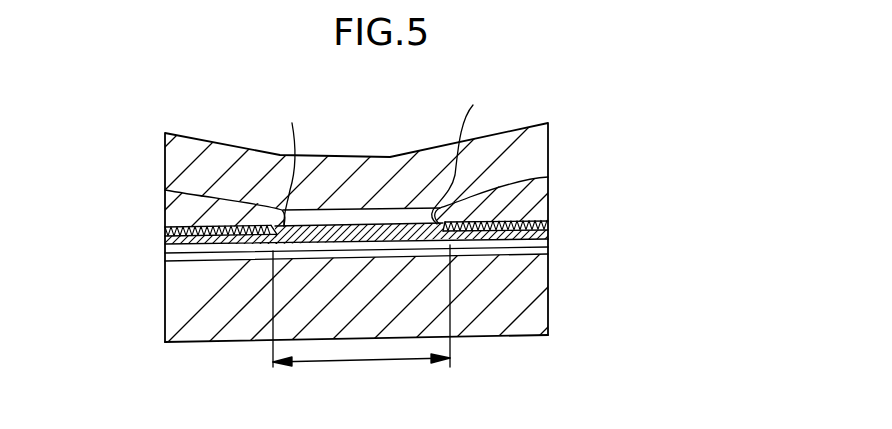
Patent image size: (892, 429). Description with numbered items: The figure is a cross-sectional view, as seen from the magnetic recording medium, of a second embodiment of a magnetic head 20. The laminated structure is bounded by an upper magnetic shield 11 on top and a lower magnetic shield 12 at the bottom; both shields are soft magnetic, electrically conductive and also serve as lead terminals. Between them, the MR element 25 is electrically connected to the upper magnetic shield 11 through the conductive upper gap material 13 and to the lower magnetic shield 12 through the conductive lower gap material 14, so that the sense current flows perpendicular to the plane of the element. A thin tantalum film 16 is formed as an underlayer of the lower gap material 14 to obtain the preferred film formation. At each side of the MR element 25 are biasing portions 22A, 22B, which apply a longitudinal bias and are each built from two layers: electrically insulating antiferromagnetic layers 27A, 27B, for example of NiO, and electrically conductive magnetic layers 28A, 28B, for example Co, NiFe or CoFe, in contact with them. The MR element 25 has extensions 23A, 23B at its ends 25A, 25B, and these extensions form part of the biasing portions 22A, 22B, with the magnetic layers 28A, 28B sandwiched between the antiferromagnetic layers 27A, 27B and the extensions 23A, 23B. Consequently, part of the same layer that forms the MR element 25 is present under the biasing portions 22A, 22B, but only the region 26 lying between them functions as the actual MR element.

The upper magnetic shield 11 is at (538, 142).
The lower magnetic shield 12 is at (542, 320).
The upper gap material 13 is at (352, 220).
The lower gap material 14 is at (548, 244).
The tantalum film 16 is at (549, 253).
The magnetic head 20 is at (387, 104).
The biasing portion 22A is at (546, 210).
The biasing portion 22B is at (295, 236).
The extension 23A is at (533, 240).
The extension 23B is at (328, 261).
The MR element 25 is at (390, 228).
The end of MR element 25A is at (465, 155).
The end of MR element 25B is at (294, 164).
The region of MR element 26 is at (410, 362).
The antiferromagnetic layer 27A is at (548, 197).
The antiferromagnetic layer 27B is at (165, 200).
The magnetic layer 28A is at (548, 224).
The magnetic layer 28B is at (166, 233).